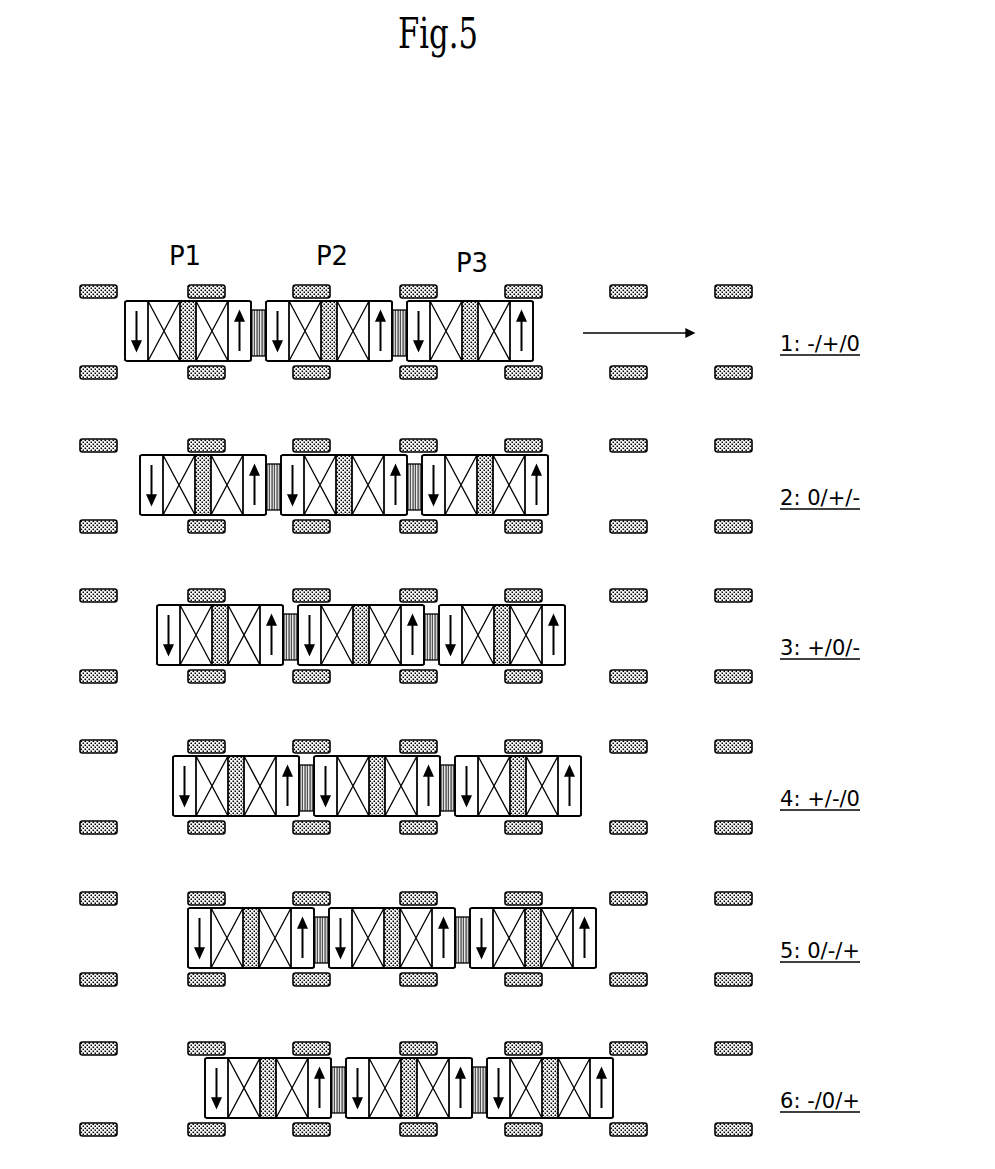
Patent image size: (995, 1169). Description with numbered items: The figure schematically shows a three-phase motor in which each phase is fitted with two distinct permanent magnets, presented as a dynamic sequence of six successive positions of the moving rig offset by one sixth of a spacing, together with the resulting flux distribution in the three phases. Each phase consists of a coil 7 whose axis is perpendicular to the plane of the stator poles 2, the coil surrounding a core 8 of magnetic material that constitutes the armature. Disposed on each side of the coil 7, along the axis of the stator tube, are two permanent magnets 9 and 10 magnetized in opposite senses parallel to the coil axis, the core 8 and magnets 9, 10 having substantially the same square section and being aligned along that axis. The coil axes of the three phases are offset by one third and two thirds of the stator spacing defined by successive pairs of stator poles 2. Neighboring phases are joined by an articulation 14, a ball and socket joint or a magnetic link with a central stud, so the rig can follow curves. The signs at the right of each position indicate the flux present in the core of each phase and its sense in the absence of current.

The stator poles 2 is at (92, 285).
The coil 7 is at (163, 301).
The core 8 is at (186, 358).
The permanent magnet 9 is at (240, 302).
The permanent magnet 10 is at (125, 310).
The articulation 14 is at (261, 354).